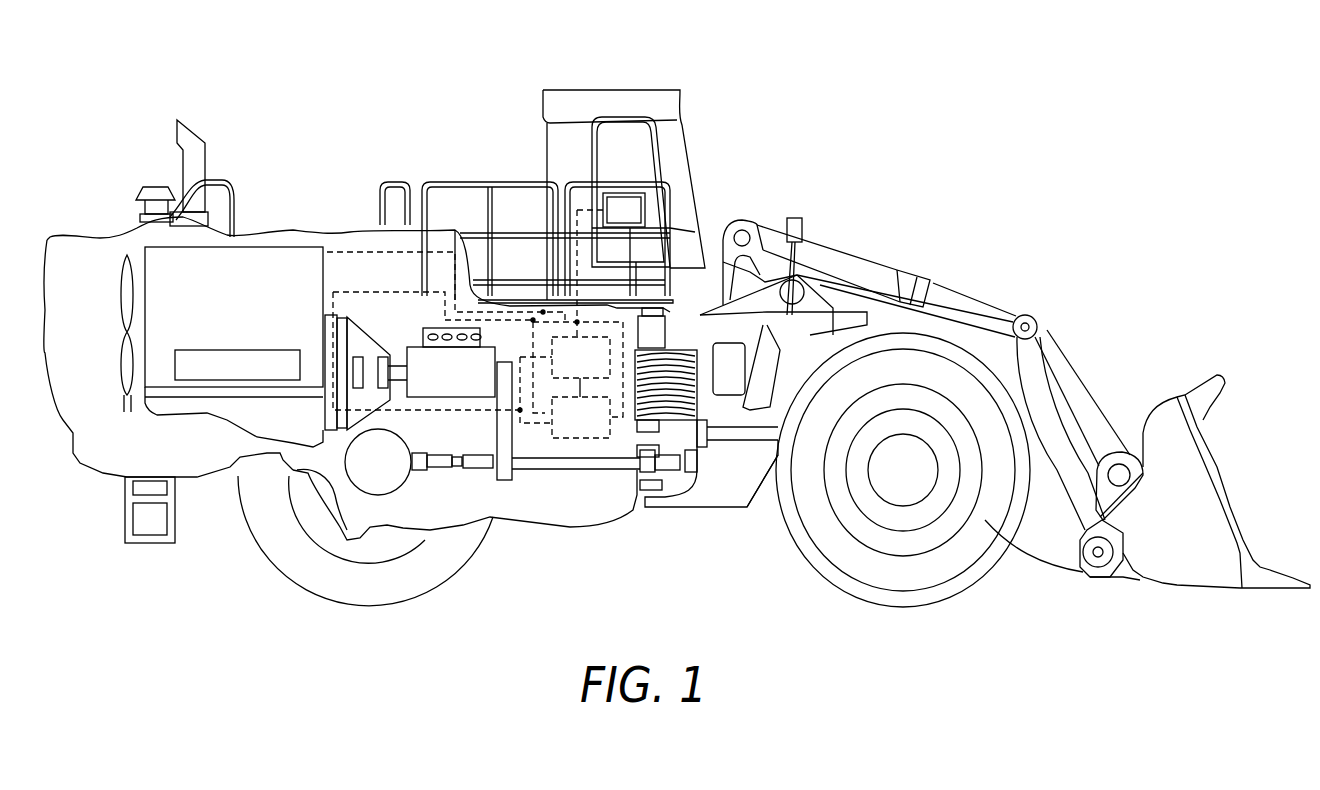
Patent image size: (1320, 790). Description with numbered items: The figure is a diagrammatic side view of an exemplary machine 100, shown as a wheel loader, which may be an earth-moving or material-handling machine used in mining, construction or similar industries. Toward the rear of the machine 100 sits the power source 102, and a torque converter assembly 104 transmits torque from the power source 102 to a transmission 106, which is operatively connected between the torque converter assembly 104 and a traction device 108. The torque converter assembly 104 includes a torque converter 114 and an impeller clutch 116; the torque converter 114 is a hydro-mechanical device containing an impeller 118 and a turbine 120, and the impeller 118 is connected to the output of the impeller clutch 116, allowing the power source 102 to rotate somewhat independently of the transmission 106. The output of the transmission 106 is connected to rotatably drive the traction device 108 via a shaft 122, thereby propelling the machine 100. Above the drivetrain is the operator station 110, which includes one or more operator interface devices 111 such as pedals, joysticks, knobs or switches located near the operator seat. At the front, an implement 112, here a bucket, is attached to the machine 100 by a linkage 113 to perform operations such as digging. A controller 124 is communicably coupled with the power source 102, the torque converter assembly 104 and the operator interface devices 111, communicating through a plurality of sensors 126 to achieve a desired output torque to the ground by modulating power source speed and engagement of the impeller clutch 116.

The machine 100 is at (1128, 121).
The power source 102 is at (240, 311).
The torque converter assembly 104 is at (385, 292).
The transmission 106 is at (464, 386).
The traction device 108 is at (358, 598).
The operator station 110 is at (638, 153).
The operator interface devices 111 is at (637, 222).
The implement 112 is at (1160, 400).
The linkage 113 is at (910, 275).
The torque converter 114 is at (372, 413).
The impeller clutch 116 is at (325, 406).
The impeller 118 is at (358, 358).
The turbine 120 is at (387, 358).
The shaft 122 is at (480, 465).
The controller 124 is at (596, 371).
The sensors 126 is at (596, 432).